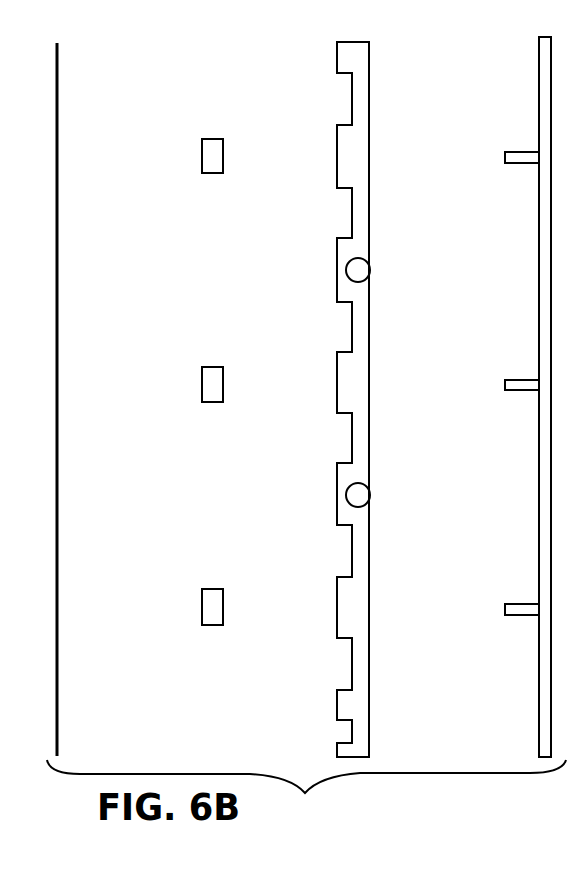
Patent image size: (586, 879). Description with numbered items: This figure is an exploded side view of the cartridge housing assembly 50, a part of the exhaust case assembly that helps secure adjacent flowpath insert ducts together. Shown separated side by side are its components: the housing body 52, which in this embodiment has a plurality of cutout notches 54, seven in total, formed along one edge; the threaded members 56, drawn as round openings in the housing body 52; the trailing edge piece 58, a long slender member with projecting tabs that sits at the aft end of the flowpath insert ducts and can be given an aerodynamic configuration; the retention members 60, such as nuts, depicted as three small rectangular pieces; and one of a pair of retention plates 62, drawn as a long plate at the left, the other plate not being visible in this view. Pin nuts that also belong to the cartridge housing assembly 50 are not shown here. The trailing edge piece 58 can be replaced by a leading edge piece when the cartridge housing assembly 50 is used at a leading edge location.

The cartridge housing assembly 50 is at (306, 789).
The housing body 52 is at (354, 50).
The cutout notches 54 is at (346, 125).
The threaded members 56 is at (358, 270).
The trailing edge piece 58 is at (545, 37).
The retention members 60 is at (214, 138).
The retention plates 62 is at (59, 52).